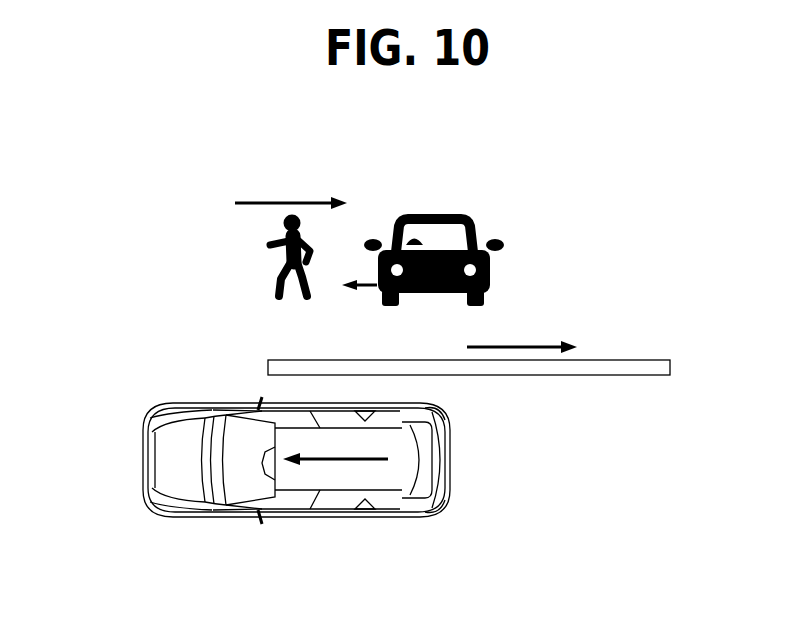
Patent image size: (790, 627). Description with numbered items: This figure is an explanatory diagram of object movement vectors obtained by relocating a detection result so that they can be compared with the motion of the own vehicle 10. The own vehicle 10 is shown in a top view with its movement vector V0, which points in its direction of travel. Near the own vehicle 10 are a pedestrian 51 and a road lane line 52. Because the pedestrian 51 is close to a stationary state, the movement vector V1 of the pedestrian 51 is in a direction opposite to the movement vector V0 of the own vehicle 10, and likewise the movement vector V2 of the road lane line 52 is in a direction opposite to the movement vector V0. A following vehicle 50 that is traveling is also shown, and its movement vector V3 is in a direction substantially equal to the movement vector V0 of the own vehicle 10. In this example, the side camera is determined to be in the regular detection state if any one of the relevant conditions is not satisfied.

The own vehicle 10 is at (262, 487).
The following vehicle 50 is at (433, 217).
The pedestrian 51 is at (268, 245).
The road lane line 52 is at (566, 376).
The movement vector of the own vehicle V0 is at (340, 465).
The movement vector of the pedestrian V1 is at (291, 200).
The movement vector of the road lane line V2 is at (530, 343).
The movement vector of the following vehicle V3 is at (364, 290).